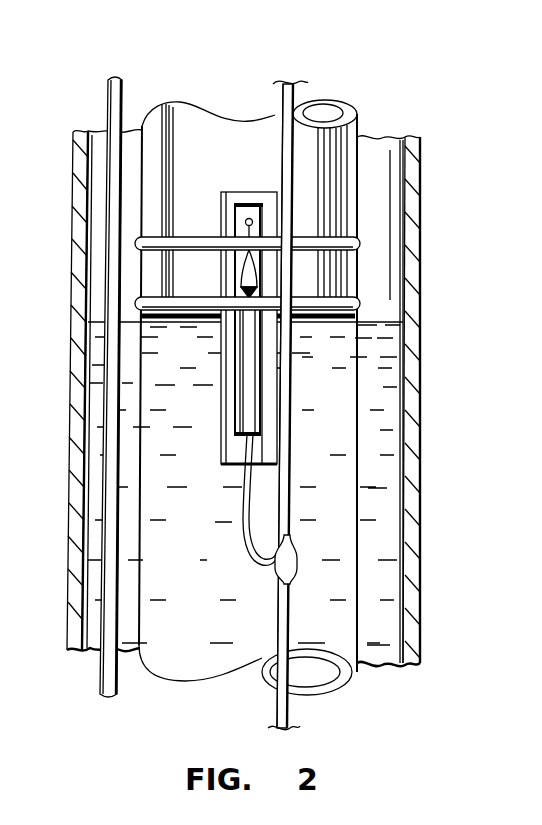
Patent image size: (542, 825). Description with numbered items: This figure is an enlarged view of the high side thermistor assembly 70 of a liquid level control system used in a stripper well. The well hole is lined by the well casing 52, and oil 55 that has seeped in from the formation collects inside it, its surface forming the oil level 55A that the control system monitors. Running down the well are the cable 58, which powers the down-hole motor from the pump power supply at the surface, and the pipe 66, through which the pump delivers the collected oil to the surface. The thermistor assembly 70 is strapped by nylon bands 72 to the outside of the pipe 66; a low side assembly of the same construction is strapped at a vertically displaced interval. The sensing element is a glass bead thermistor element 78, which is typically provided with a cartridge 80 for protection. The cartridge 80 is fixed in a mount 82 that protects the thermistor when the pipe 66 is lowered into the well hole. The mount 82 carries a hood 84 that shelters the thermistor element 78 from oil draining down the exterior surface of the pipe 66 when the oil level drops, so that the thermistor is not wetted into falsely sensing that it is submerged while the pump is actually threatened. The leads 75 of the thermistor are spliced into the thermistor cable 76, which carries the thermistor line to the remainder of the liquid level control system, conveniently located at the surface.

The well casing 52 is at (418, 590).
The oil 55 is at (380, 430).
The liquid level 55A is at (383, 322).
The cable 58 is at (108, 112).
The pipe 66 is at (137, 507).
The thermistor assembly 70 is at (234, 313).
The nylon bands 72 is at (345, 242).
The leads 75 is at (245, 526).
The thermistor cable 76 is at (290, 620).
The thermistor element 78 is at (247, 216).
The cartridge 80 is at (235, 358).
The mount 82 is at (268, 414).
The hood 84 is at (236, 194).